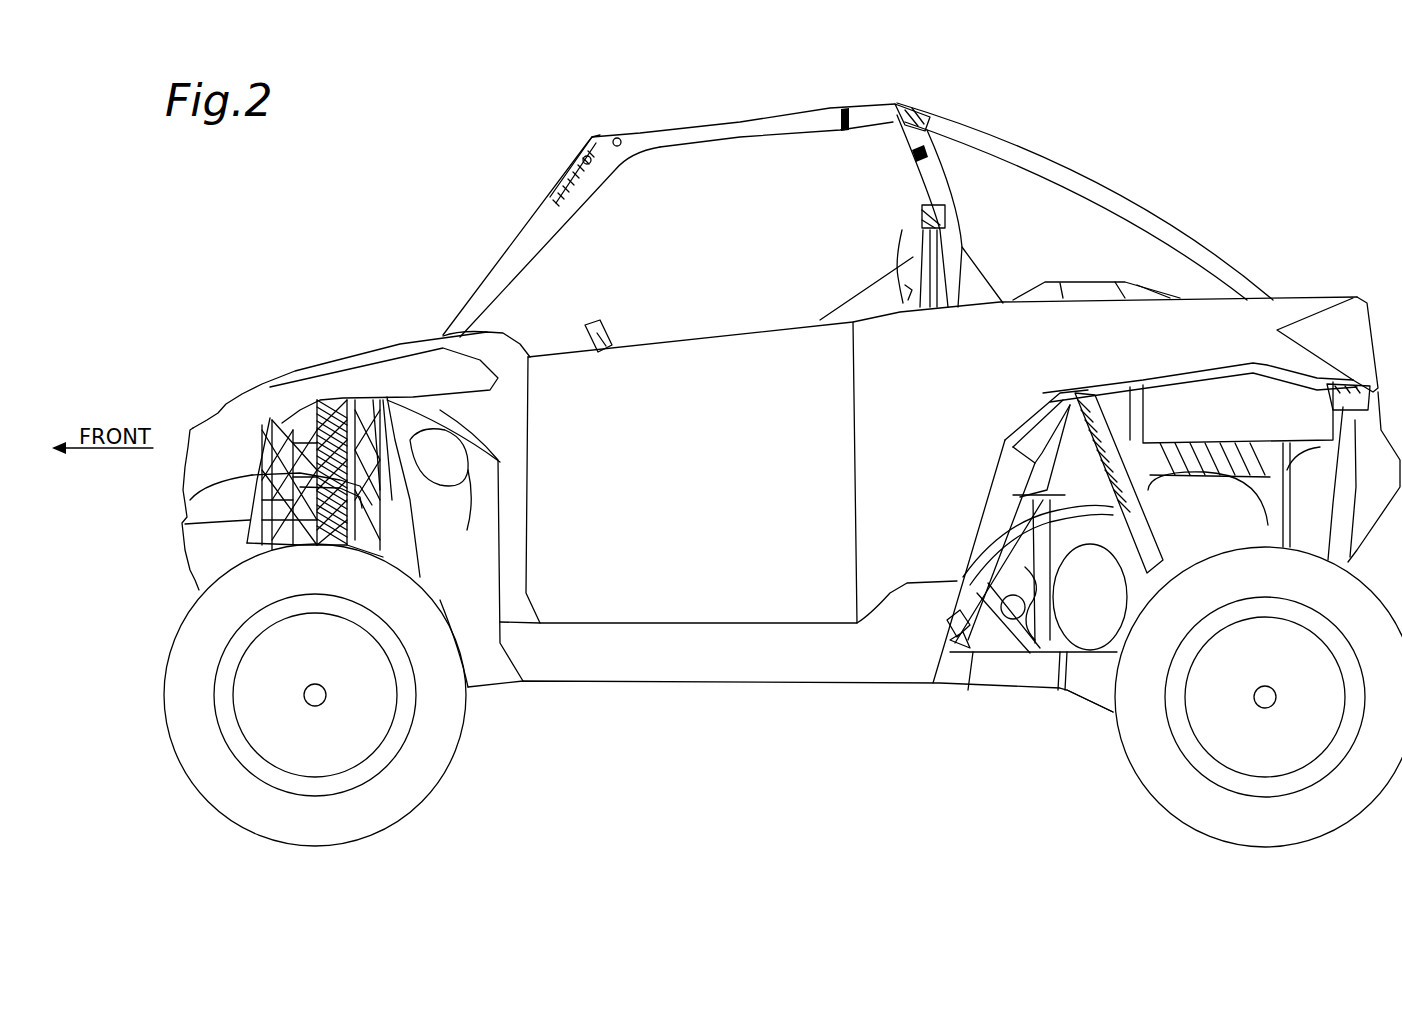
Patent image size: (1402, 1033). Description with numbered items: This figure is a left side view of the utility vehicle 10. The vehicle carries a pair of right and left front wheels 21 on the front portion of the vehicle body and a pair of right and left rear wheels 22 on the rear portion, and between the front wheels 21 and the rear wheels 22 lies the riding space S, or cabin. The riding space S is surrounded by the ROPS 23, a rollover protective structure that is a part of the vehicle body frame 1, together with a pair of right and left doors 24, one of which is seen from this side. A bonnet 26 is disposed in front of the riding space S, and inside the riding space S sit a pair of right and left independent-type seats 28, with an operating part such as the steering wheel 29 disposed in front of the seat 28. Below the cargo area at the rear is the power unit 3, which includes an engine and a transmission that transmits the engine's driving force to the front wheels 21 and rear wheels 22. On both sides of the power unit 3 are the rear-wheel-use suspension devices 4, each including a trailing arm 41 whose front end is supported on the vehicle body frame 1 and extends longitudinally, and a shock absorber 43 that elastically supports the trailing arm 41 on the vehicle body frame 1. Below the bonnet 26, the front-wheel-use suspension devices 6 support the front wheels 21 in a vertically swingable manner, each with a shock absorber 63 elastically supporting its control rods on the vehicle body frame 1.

The vehicle body frame 1 is at (801, 88).
The power unit 3 is at (1133, 600).
The rear-wheel-use suspension device 4 is at (1045, 724).
The front-wheel-use suspension device 6 is at (378, 538).
The utility vehicle 10 is at (1170, 124).
The front wheel 21 is at (387, 747).
The rear wheel 22 is at (1199, 752).
The ROPS 23 is at (752, 120).
The door 24 is at (673, 470).
The bonnet 26 is at (318, 365).
The seat 28 is at (912, 260).
The steering wheel 29 is at (588, 323).
The trailing arm 41 is at (1012, 672).
The shock absorber 43 is at (973, 655).
The shock absorber 63 is at (347, 498).
The riding space S is at (712, 272).